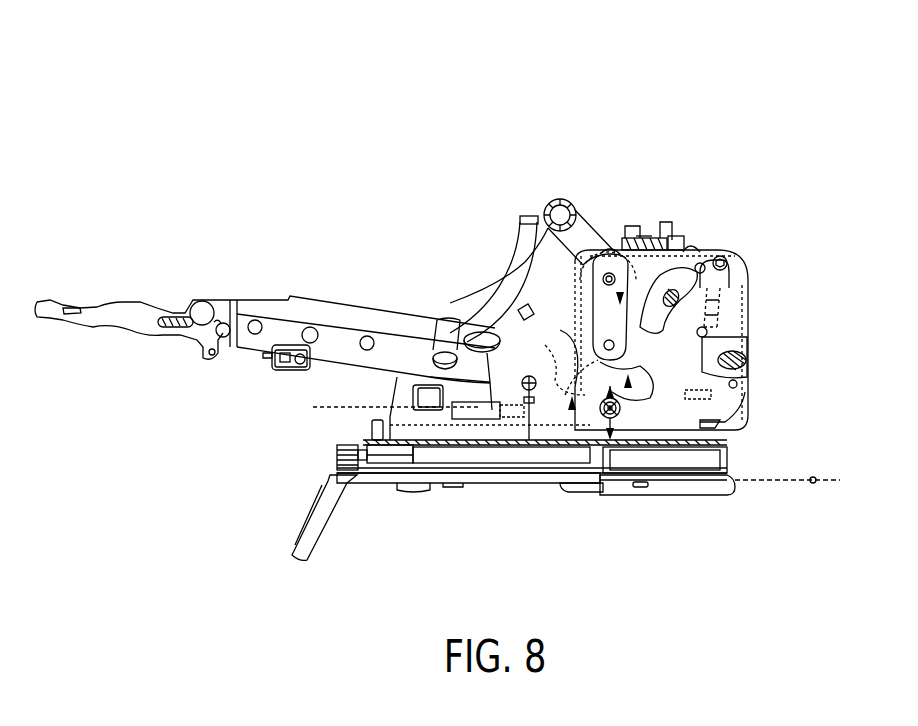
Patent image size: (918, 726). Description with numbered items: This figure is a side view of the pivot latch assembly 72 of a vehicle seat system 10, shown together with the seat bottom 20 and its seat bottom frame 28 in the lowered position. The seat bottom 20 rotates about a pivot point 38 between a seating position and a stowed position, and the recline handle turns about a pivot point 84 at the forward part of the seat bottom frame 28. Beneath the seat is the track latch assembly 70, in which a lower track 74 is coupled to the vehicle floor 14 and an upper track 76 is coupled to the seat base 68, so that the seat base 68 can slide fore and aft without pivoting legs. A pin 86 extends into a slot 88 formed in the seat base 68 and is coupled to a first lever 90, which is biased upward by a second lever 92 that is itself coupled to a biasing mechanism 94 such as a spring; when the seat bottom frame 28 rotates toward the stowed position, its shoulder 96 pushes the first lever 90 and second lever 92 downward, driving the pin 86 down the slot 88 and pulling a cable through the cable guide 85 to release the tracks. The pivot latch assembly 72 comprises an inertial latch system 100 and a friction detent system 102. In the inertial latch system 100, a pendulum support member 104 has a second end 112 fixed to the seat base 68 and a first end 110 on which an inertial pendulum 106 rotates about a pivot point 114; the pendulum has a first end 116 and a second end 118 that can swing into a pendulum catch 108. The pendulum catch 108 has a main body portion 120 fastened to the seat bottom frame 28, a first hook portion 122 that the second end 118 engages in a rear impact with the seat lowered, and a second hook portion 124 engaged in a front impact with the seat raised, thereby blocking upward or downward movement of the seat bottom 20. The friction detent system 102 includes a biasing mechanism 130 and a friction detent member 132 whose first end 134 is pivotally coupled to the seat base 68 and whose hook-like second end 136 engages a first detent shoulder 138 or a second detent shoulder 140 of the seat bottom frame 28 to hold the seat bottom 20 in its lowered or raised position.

The seat assembly 10 is at (678, 82).
The seat bottom 20 is at (319, 218).
The pivot point 84 is at (200, 304).
The seat bottom frame 28 is at (345, 316).
The pendulum catch 108 is at (505, 252).
The pendulum support member 104 is at (595, 292).
The second end 112 is at (586, 200).
The pivot point 114 is at (562, 276).
The second end 118 is at (602, 343).
The first hook portion 122 is at (482, 304).
The pivot point 38 is at (627, 234).
The cable guide 85 is at (611, 242).
The main body portion 120 is at (660, 228).
The first end 110 is at (673, 248).
The inertial latch system 100 is at (691, 220).
The second hook portion 124 is at (714, 252).
The shoulder 96 is at (730, 250).
The biasing mechanism 94 is at (730, 270).
The seat base 68 is at (738, 298).
The first lever 90 is at (730, 297).
The second detent shoulder 140 is at (705, 331).
The track latch assembly 70 is at (769, 347).
The pin 86 is at (715, 350).
The second lever 92 is at (718, 378).
The slot 88 is at (738, 386).
The inertial pendulum 106 is at (745, 408).
The friction detent system 102 is at (665, 407).
The vehicle floor 14 is at (781, 483).
The upper track 76 is at (336, 447).
The first detent shoulder 138 is at (550, 373).
The lower track 74 is at (400, 458).
The pivot latch assembly 72 is at (515, 437).
The second end 136 is at (545, 404).
The friction detent member 132 is at (604, 420).
The first end 134 is at (620, 400).
The biasing mechanism 130 is at (640, 380).
The first end 116 is at (665, 345).